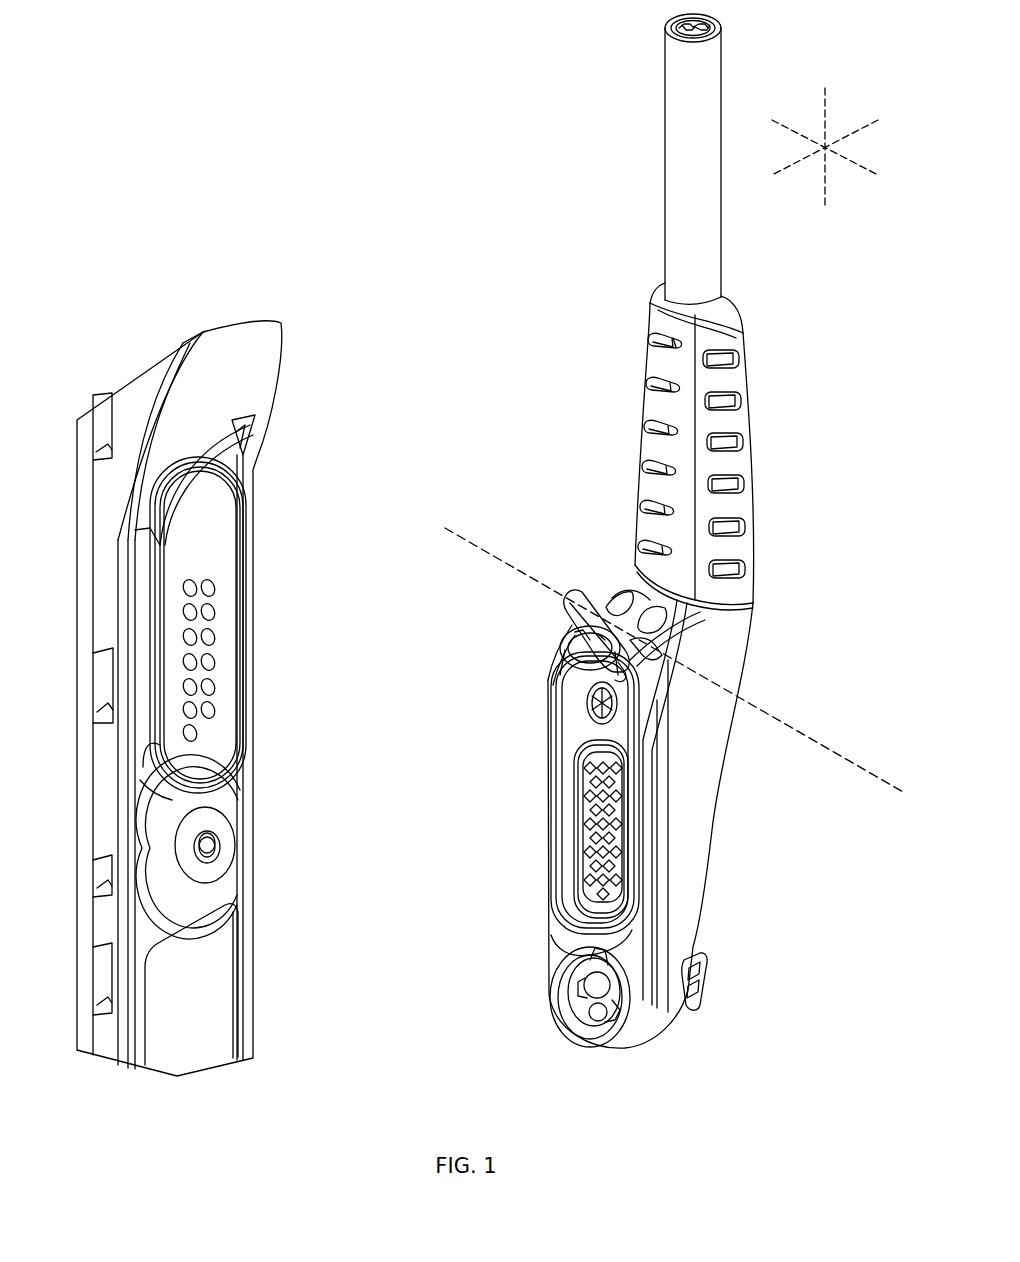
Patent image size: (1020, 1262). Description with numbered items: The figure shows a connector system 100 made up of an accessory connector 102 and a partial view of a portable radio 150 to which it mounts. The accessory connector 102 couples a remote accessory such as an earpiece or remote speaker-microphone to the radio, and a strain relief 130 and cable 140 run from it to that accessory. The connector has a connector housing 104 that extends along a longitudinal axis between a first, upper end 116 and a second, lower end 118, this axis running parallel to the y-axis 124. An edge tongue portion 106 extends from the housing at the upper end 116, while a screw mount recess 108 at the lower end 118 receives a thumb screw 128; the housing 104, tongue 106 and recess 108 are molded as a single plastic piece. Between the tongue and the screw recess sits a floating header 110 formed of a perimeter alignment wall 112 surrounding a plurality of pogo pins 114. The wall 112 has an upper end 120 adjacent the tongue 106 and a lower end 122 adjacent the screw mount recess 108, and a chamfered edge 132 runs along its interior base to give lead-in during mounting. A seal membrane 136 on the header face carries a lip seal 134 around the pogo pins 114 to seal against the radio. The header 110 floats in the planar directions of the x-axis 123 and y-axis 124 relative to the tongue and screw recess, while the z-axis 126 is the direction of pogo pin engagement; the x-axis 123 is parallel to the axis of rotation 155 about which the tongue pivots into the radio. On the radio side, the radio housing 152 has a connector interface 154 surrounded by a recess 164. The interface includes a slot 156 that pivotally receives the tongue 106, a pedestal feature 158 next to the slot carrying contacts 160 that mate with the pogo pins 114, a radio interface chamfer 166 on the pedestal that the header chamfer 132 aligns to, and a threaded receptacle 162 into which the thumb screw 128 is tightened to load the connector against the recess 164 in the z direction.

The connector system 100 is at (180, 68).
The accessory connector 102 is at (745, 806).
The connector housing 104 is at (740, 685).
The edge tongue portion 106 is at (570, 600).
The screw mount recess 108 is at (575, 995).
The floating header 110 is at (477, 638).
The perimeter alignment wall 112 is at (560, 785).
The pogo pins 114 is at (592, 840).
The first, upper end 116 is at (605, 607).
The second, lower end 118 is at (583, 1042).
The upper end of perimeter alignment wall 120 is at (578, 636).
The lower end of perimeter alignment wall 122 is at (560, 916).
The x-axis 123 is at (868, 225).
The y-axis 124 is at (803, 52).
The z-axis 126 is at (743, 218).
The thumb screw 128 is at (708, 980).
The strain relief 130 is at (757, 480).
The chamfered edge 132 is at (566, 722).
The lip seal 134 is at (622, 800).
The seal membrane 136 is at (620, 748).
The cable 140 is at (722, 250).
The portable radio 150 is at (297, 355).
The radio housing 152 is at (262, 393).
The connector interface 154 is at (335, 428).
The axis of rotation 155 is at (847, 760).
The slot 156 is at (232, 438).
The pedestal feature 158 is at (158, 763).
The contacts 160 is at (190, 630).
The threaded receptacle 162 is at (193, 848).
The recess 164 is at (225, 770).
The radio interface chamfer 166 is at (135, 530).